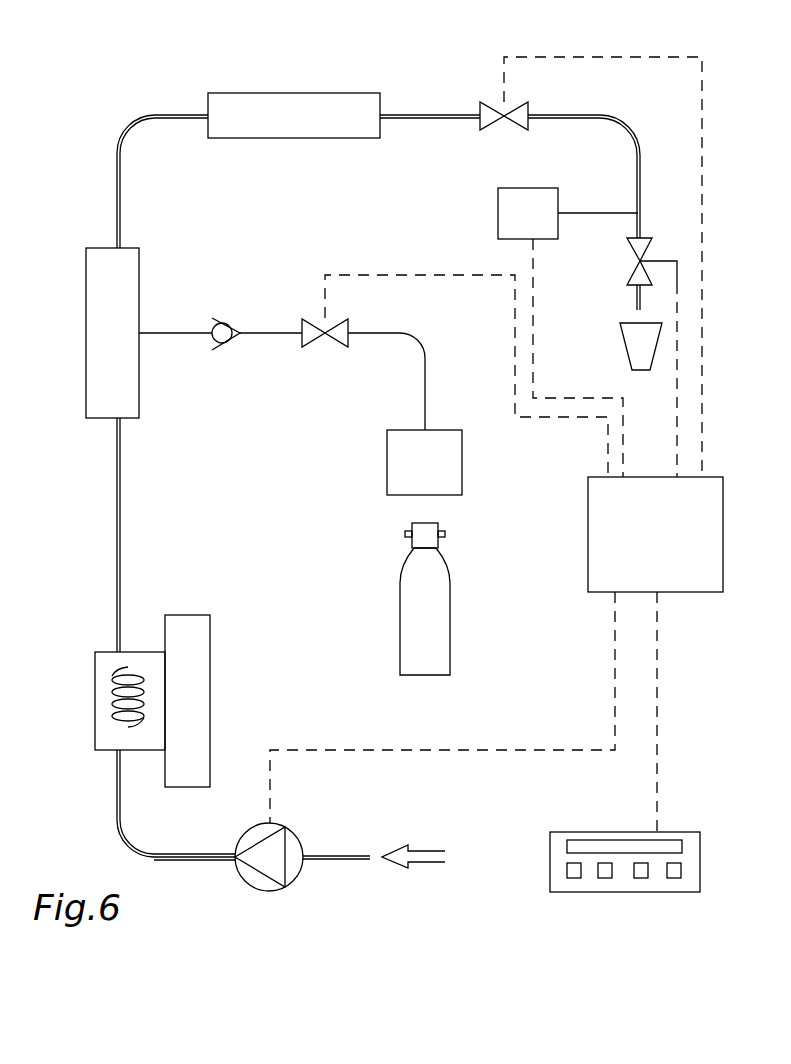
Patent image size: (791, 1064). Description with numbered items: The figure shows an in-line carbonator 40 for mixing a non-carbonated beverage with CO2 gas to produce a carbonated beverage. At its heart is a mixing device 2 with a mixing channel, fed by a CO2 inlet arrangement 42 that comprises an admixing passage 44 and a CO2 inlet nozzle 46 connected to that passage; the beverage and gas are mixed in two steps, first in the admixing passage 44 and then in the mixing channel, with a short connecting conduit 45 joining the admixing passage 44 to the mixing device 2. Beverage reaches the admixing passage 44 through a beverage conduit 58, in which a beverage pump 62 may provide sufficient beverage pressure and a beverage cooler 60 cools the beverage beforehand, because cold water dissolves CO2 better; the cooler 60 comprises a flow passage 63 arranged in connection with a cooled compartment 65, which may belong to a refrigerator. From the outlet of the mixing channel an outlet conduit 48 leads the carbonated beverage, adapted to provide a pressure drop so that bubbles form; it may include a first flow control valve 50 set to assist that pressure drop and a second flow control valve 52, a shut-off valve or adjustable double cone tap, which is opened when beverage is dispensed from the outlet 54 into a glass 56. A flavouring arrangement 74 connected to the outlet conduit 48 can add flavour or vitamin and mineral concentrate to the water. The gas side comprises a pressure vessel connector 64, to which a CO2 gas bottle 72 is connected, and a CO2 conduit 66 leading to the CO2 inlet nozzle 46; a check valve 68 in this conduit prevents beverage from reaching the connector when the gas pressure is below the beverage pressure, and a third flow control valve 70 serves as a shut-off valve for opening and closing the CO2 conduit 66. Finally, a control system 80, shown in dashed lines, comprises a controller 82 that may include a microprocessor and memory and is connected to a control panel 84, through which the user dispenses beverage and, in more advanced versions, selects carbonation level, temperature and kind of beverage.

The carbonator 40 is at (80, 64).
The mixing device 2 is at (294, 115).
The CO2 inlet arrangement 42 is at (75, 253).
The admixing passage 44 is at (112, 333).
The connecting conduit 45 is at (116, 167).
The CO2 inlet nozzle 46 is at (139, 334).
The outlet conduit 48 is at (638, 180).
The first flow control valve 50 is at (491, 104).
The second flow control valve 52 is at (630, 245).
The outlet 54 is at (638, 298).
The glass 56 is at (638, 345).
The beverage conduit 58 is at (116, 790).
The beverage cooler 60 is at (105, 733).
The beverage pump 62 is at (258, 878).
The flow passage 63 is at (112, 678).
The pressure vessel connector 64 is at (424, 462).
The cooled compartment 65 is at (187, 701).
The CO2 conduit 66 is at (273, 335).
The check valve 68 is at (215, 323).
The third flow control valve 70 is at (305, 322).
The CO2 gas bottle 72 is at (410, 620).
The flavouring arrangement 74 is at (568, 213).
The control system 80 is at (697, 612).
The controller 82 is at (655, 534).
The control panel 84 is at (695, 848).